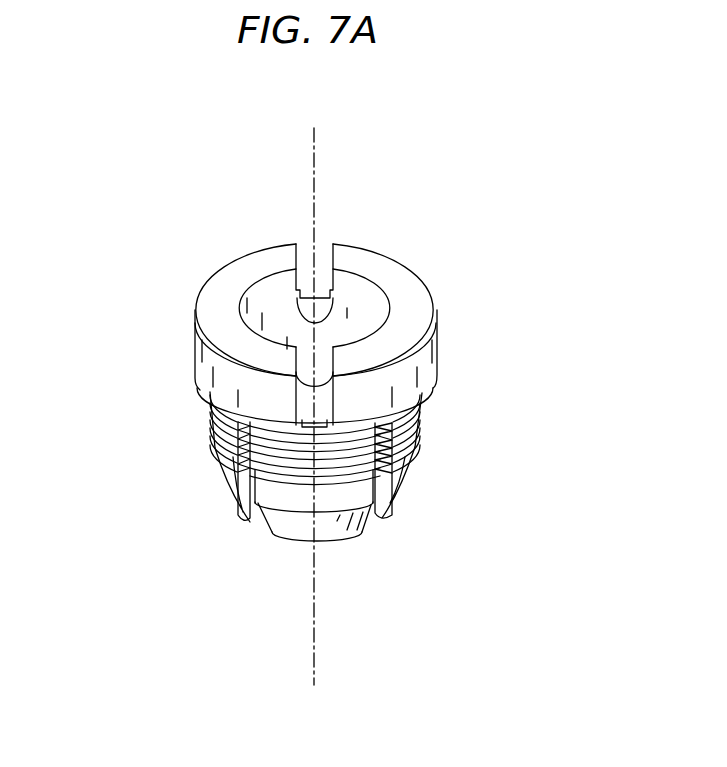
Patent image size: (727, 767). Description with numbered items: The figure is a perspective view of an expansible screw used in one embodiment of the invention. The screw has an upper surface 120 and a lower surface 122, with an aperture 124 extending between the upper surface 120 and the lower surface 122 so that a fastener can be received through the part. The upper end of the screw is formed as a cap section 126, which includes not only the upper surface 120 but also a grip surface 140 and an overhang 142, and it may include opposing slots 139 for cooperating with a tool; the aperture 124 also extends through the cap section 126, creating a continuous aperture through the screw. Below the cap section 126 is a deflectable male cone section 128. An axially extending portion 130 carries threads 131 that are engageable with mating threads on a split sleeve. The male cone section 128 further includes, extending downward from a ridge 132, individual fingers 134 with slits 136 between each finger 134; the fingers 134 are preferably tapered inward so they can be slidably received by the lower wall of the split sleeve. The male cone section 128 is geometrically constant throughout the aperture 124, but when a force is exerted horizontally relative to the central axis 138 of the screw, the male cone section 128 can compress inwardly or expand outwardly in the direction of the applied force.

The upper surface 120 is at (217, 297).
The lower surface 122 is at (282, 540).
The aperture 124 is at (347, 317).
The cap section 126 is at (437, 307).
The deflectable male cone section 128 is at (412, 404).
The axially extending portion 130 is at (420, 393).
The threads 131 is at (418, 408).
The ridge 132 is at (377, 459).
The individual fingers 134 is at (337, 541).
The slits 136 is at (372, 527).
The central axis 138 is at (315, 178).
The opposing slots 139 is at (305, 248).
The grip surface 140 is at (213, 363).
The overhang 142 is at (193, 387).